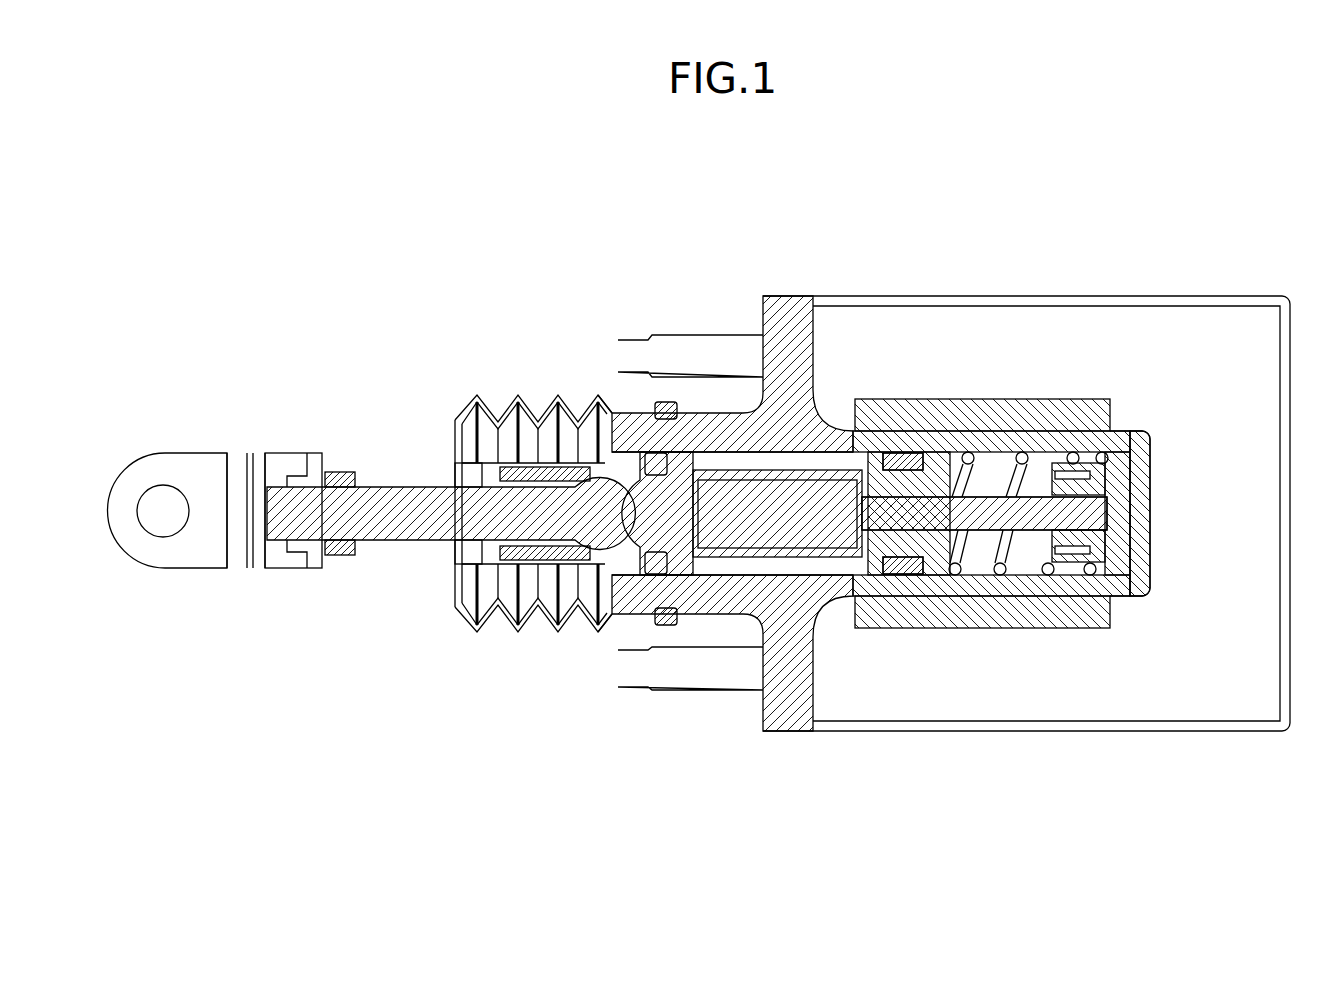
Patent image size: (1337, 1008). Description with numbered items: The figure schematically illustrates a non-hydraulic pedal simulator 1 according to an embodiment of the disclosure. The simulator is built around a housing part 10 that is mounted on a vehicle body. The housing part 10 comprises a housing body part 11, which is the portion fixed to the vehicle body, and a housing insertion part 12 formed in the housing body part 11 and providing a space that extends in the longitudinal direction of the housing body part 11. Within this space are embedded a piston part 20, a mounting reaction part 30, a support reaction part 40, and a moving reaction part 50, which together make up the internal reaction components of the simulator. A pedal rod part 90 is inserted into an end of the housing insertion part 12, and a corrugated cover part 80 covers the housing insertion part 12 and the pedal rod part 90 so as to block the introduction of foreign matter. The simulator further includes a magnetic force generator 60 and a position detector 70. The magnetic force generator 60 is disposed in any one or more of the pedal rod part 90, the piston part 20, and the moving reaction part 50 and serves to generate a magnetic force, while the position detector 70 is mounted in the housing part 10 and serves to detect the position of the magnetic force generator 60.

The non-hydraulic pedal simulator 1 is at (1310, 196).
The housing part 10 is at (951, 583).
The housing body part 11 is at (960, 731).
The housing insertion part 12 is at (1129, 592).
The piston part 20 is at (633, 562).
The mounting reaction part 30 is at (777, 500).
The support reaction part 40 is at (1118, 470).
The moving reaction part 50 is at (1003, 455).
The magnetic force generator 60 is at (902, 570).
The position detector 70 is at (877, 399).
The corrugated cover part 80 is at (465, 620).
The pedal rod part 90 is at (370, 541).